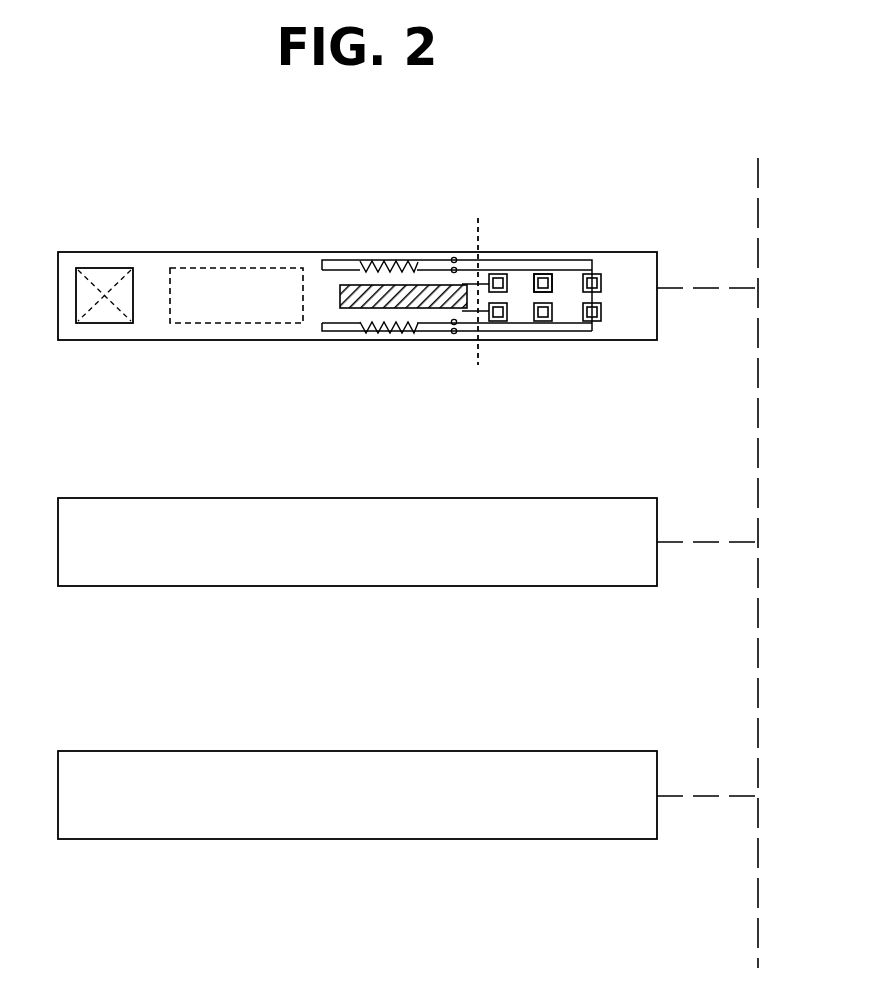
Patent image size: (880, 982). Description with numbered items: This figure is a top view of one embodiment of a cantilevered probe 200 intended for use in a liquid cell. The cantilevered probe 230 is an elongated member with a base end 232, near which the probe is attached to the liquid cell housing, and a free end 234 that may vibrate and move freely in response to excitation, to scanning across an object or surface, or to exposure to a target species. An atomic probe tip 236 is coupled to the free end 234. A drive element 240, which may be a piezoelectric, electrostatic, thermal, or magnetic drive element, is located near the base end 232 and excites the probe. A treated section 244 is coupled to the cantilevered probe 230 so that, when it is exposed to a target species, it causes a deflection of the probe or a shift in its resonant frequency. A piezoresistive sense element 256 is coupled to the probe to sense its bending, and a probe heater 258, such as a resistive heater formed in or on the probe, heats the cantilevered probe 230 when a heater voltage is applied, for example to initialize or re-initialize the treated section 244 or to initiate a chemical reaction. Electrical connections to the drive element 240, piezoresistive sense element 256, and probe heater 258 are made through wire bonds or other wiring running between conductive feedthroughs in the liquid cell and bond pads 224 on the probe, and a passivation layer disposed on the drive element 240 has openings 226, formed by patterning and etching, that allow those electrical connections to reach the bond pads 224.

The cantilevered probe top view 200 is at (130, 130).
The bond pads 224 is at (541, 275).
The openings 226 is at (547, 273).
The cantilevered probe 230 is at (208, 252).
The base end 232 is at (462, 340).
The free end 234 is at (87, 340).
The atomic probe tip 236 is at (100, 268).
The drive element 240 is at (353, 285).
The treated section 244 is at (220, 323).
The piezoresistive sense element 256 is at (385, 267).
The probe heater 258 is at (387, 333).